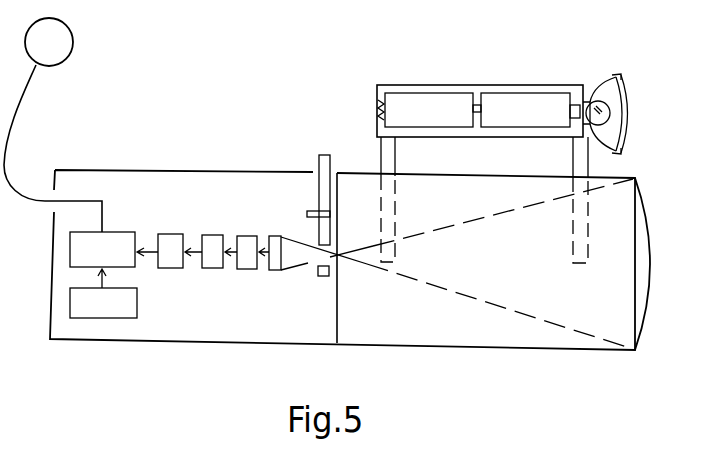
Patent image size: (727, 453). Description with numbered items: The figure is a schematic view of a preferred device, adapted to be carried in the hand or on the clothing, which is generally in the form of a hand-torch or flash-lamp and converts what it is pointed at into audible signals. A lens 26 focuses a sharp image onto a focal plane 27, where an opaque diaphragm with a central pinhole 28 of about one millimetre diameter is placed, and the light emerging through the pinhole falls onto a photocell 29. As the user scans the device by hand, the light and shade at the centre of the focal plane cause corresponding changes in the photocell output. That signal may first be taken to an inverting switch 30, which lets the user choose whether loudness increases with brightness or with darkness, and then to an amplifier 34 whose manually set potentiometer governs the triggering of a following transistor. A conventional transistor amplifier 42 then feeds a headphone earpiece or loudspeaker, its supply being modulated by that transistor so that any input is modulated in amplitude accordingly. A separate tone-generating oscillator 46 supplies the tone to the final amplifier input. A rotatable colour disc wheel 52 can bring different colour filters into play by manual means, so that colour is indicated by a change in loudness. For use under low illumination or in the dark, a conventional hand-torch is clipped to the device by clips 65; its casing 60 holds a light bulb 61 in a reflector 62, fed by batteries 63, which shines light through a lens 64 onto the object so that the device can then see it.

The lens 26 is at (650, 252).
The focal plane 27 is at (347, 262).
The pinhole 28 is at (345, 252).
The photocell 29 is at (275, 235).
The inverting switch 30 is at (250, 235).
The amplifier 34 is at (212, 233).
The transistor amplifier 42 is at (118, 231).
The tone-generating oscillator 46 is at (125, 318).
The rotatable colour disc wheel 52 is at (318, 163).
The casing 60 is at (437, 85).
The light bulb 61 is at (611, 113).
The reflector 62 is at (624, 95).
The batteries 63 is at (444, 118).
The lens 64 is at (626, 130).
The clips 65 is at (397, 158).